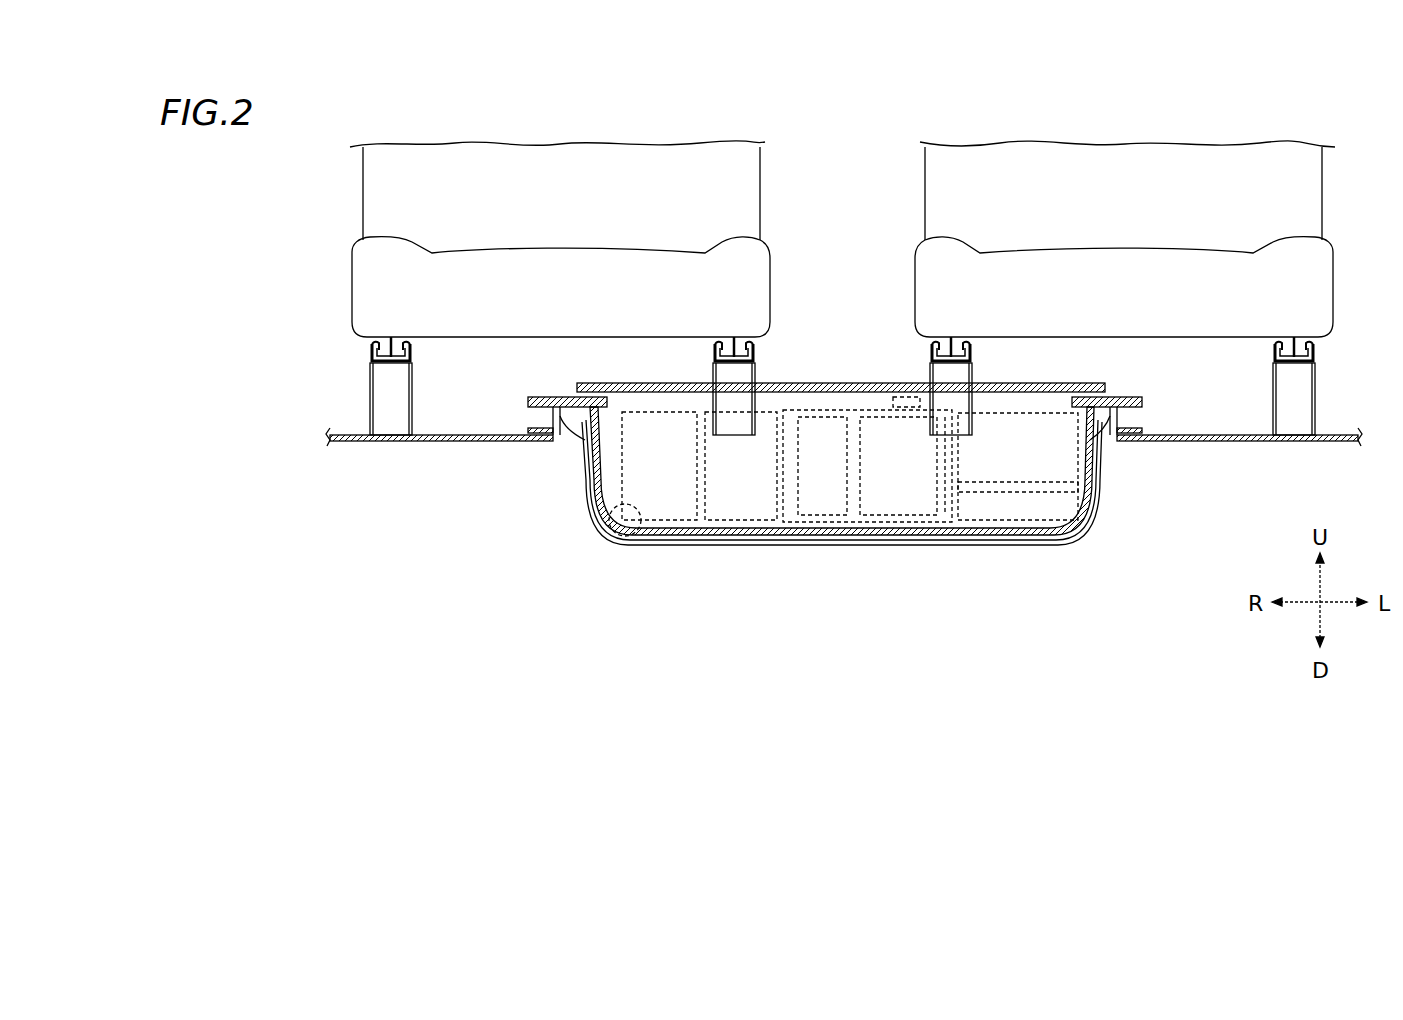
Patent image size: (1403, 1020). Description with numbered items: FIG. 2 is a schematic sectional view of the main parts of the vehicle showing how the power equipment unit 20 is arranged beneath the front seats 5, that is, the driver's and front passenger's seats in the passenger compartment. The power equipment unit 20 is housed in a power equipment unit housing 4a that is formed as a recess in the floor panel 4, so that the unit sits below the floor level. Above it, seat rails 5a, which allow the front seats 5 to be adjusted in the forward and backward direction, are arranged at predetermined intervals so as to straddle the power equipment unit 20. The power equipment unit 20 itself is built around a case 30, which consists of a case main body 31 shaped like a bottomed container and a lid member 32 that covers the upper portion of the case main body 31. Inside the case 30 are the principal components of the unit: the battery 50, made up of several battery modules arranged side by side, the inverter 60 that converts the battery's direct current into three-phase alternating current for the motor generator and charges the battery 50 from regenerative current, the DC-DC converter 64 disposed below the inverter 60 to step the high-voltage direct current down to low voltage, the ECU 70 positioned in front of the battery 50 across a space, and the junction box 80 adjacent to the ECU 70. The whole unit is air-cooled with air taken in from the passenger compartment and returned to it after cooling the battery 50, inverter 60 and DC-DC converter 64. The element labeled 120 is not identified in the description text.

The floor panel 4 is at (457, 443).
The power equipment unit housing 4a is at (612, 512).
The front seats 5 is at (363, 188).
The seat rails 5a is at (370, 350).
The power equipment unit 20 is at (828, 484).
The case 30 is at (575, 443).
The case main body 31 is at (912, 532).
The lid member 32 is at (642, 384).
The battery 50 is at (875, 538).
The inverter 60 is at (1042, 412).
The DC-DC converter 64 is at (1090, 508).
The ECU 70 is at (968, 547).
The junction box 80 is at (840, 410).
The connector 120 is at (930, 398).